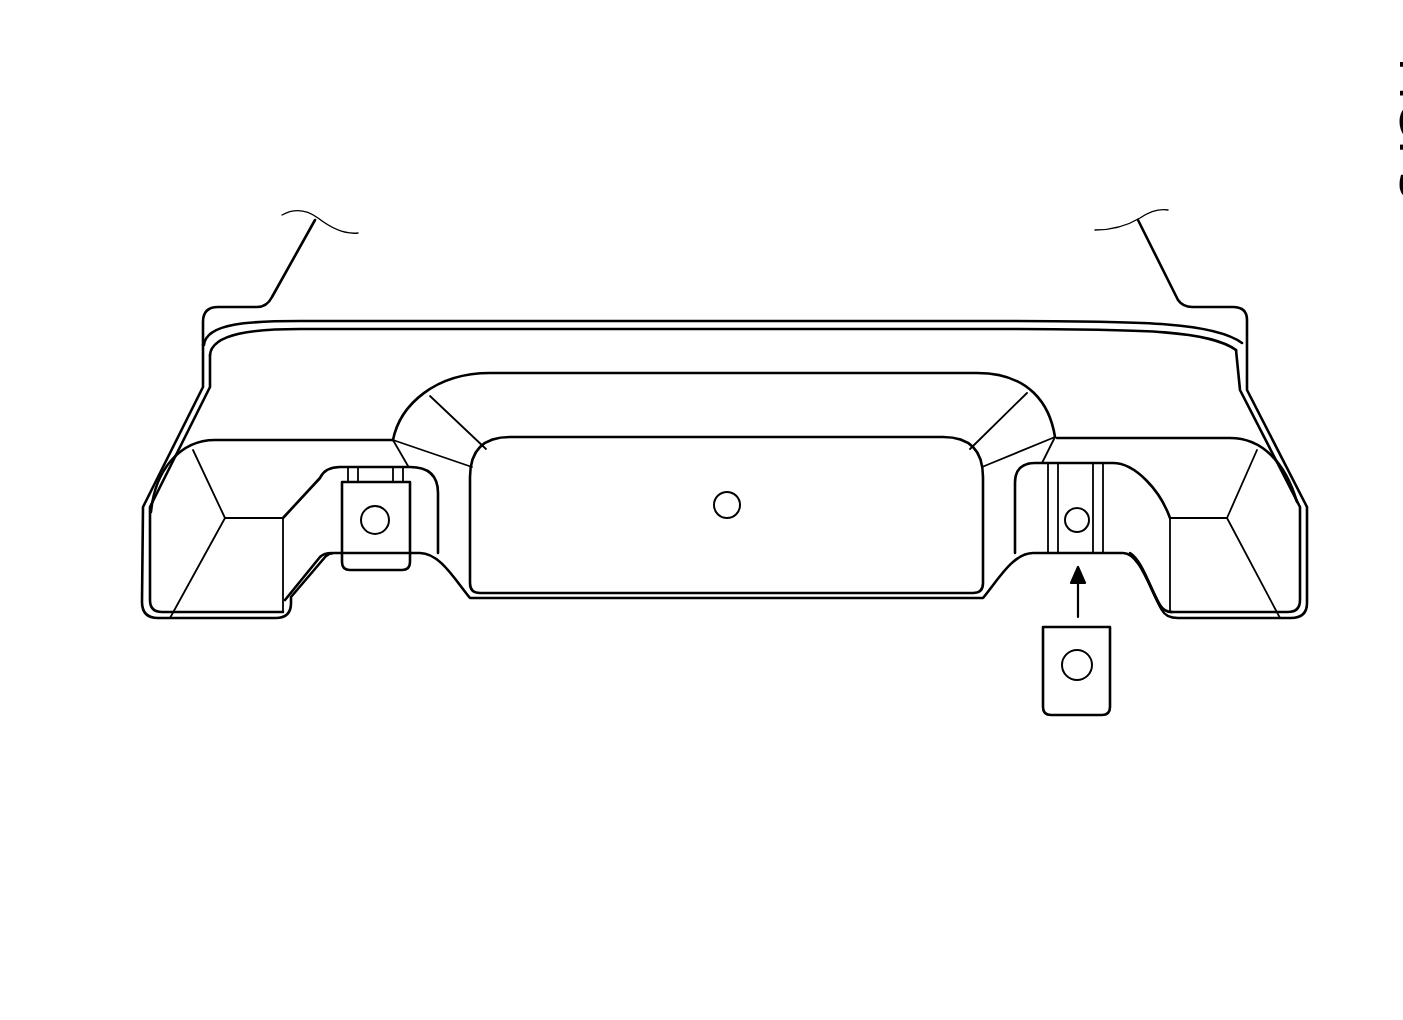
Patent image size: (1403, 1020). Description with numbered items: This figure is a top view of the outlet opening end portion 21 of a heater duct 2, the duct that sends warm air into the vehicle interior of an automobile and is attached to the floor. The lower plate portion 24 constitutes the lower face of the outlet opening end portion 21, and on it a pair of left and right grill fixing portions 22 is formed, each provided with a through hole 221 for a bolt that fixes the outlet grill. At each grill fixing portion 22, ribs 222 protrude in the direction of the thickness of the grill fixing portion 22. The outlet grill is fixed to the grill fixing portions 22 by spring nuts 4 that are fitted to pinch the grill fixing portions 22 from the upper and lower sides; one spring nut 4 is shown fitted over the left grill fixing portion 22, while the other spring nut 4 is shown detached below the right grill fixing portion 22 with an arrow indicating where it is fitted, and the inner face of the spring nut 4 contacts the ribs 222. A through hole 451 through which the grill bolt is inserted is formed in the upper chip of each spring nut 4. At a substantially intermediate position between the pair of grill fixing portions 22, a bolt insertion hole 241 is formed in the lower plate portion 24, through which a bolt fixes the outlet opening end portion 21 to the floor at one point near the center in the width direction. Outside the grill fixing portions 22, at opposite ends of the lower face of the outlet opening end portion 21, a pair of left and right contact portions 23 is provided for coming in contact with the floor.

The heater duct 2 is at (1128, 277).
The outlet opening end portion 21 is at (537, 516).
The grill fixing portion 22 is at (330, 542).
The through hole 221 is at (1078, 508).
The rib 222 is at (1098, 517).
The contact portion 23 is at (215, 620).
The lower plate portion 24 is at (767, 560).
The bolt insertion hole 241 is at (718, 512).
The spring nut 4 is at (388, 555).
The through hole 451 is at (368, 506).